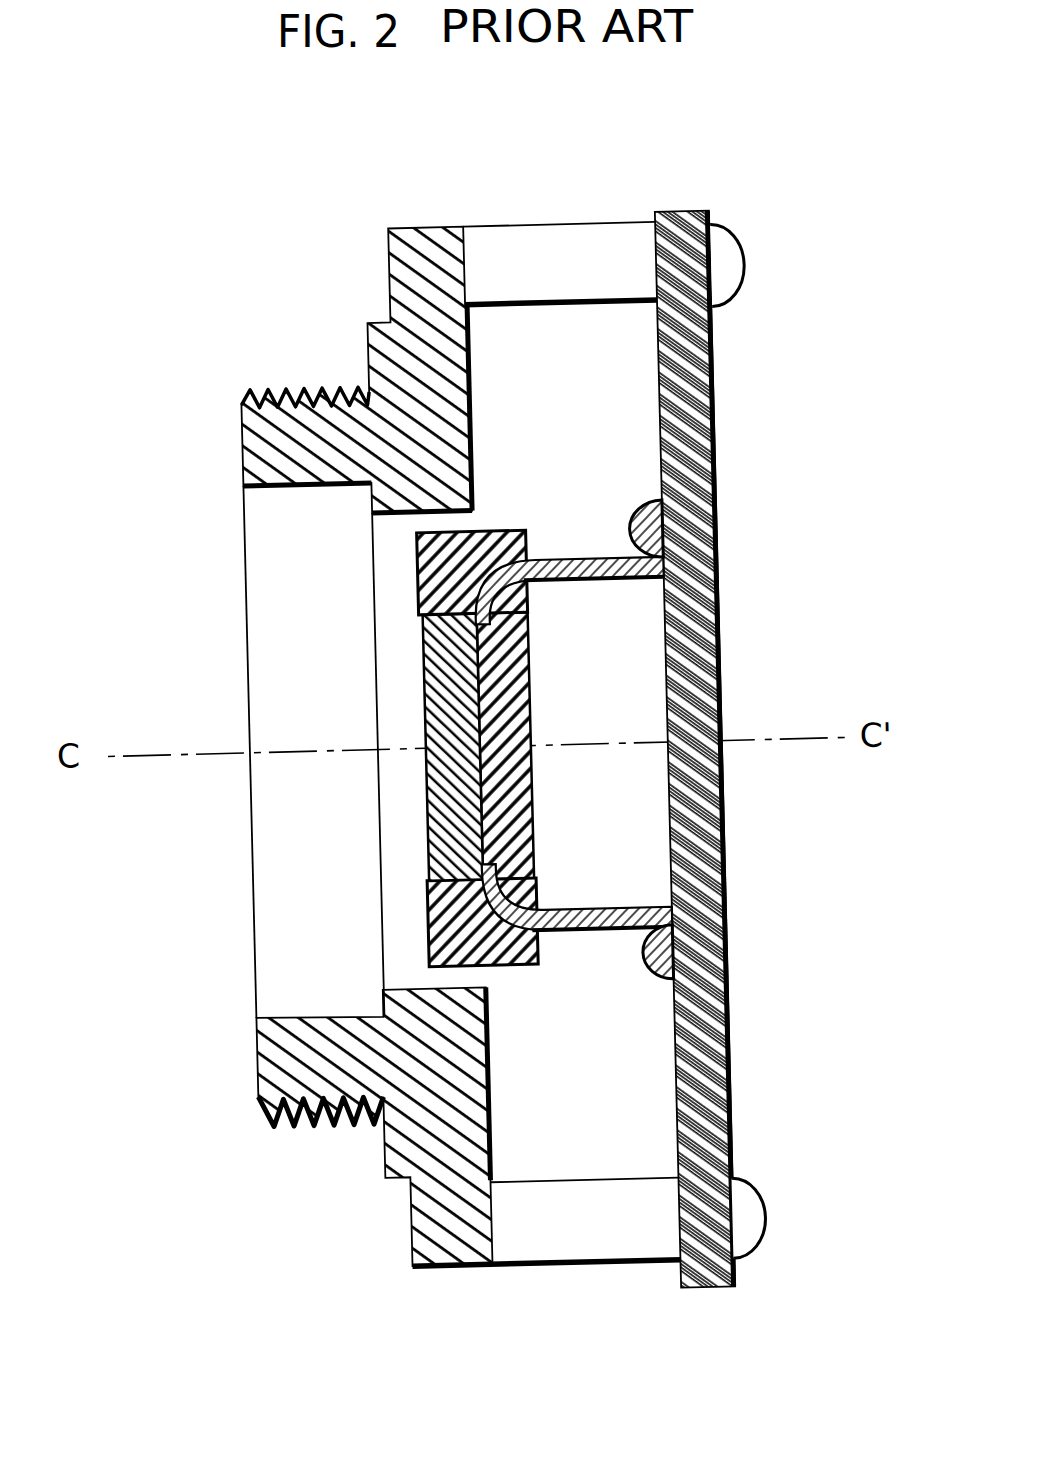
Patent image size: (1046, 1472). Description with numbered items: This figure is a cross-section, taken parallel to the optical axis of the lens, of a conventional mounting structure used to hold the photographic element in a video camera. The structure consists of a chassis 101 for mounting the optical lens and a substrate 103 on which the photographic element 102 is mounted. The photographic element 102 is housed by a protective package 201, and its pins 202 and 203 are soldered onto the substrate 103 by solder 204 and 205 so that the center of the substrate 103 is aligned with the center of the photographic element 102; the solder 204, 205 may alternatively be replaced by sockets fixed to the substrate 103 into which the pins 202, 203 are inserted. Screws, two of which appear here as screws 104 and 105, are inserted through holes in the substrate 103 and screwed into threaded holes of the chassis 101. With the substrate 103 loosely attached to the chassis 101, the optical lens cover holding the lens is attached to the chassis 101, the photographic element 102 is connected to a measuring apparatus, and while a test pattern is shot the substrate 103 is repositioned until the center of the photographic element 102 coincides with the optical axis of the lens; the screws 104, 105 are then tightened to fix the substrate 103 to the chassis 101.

The chassis 101 is at (433, 222).
The photographic element 102 is at (424, 780).
The substrate 103 is at (729, 400).
The screw 104 is at (750, 245).
The screw 105 is at (738, 1215).
The protective package 201 is at (425, 554).
The pin 202 is at (578, 555).
The pin 203 is at (613, 909).
The solder 204 is at (638, 496).
The solder 205 is at (636, 975).